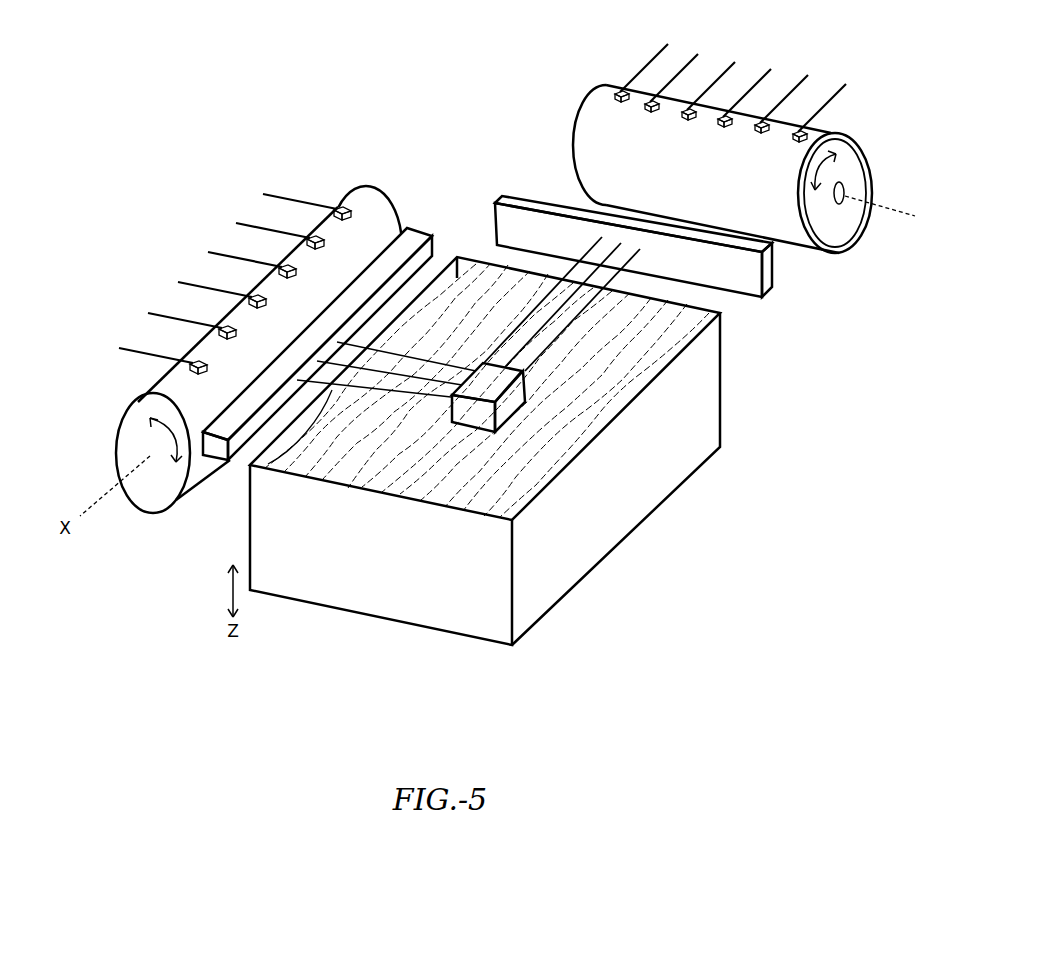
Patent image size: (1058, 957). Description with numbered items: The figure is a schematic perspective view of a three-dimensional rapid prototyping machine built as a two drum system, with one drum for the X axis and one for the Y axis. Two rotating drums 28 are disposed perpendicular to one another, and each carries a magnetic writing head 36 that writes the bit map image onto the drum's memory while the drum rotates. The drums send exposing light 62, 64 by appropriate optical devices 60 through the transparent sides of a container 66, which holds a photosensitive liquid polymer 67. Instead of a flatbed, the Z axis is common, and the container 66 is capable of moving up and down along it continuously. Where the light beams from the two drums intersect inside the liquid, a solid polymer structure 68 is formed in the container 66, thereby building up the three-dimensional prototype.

The rotating drum 28 is at (850, 130).
The magnetic writing head 36 is at (338, 205).
The optical devices 60 is at (517, 200).
The exposing light 62 is at (240, 466).
The exposing light 64 is at (618, 270).
The container 66 is at (437, 563).
The photosensitive liquid polymer 67 is at (458, 455).
The solid polymer structure 68 is at (515, 398).